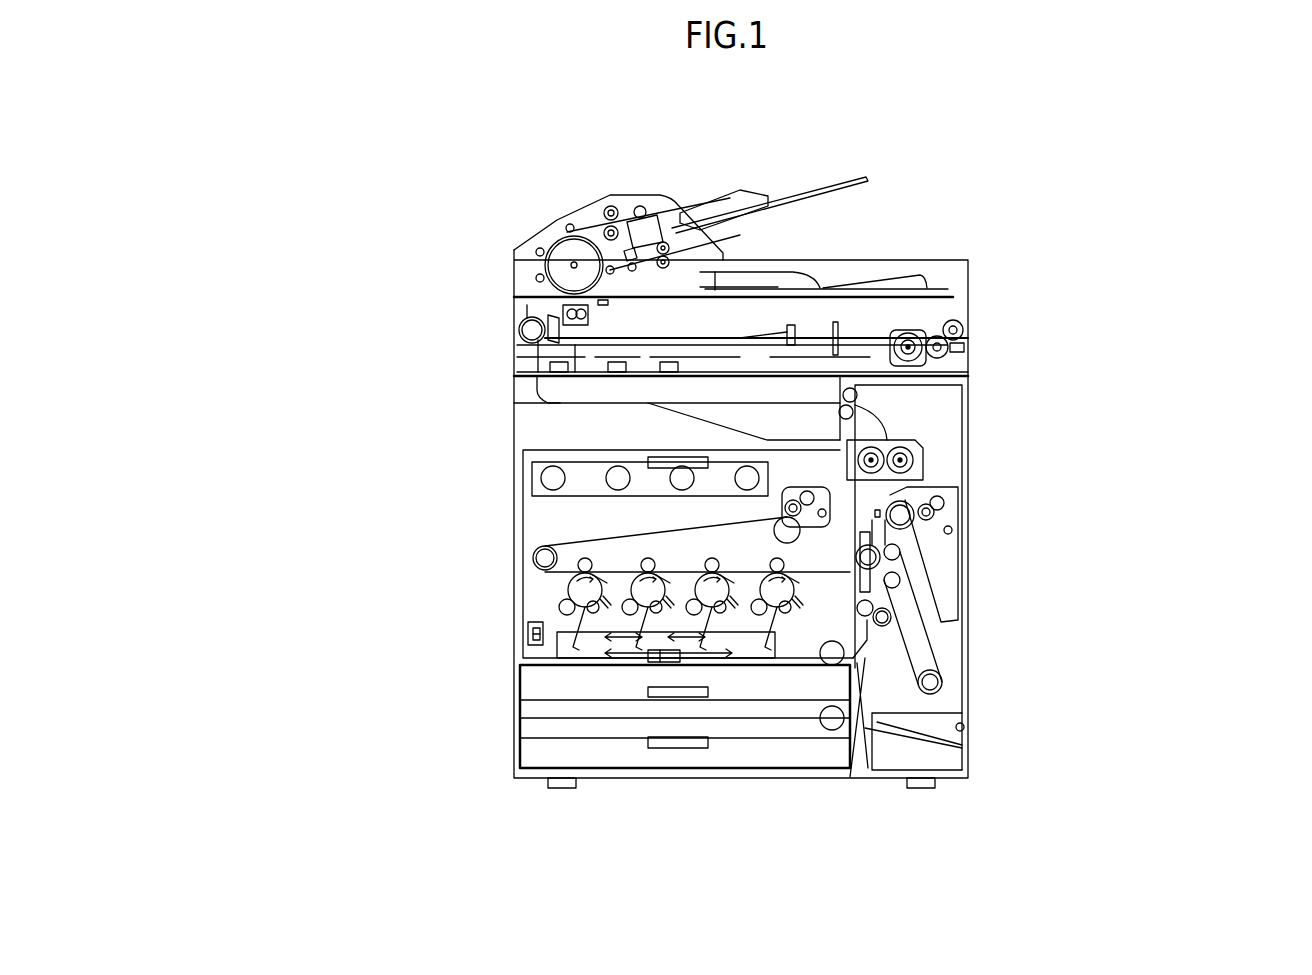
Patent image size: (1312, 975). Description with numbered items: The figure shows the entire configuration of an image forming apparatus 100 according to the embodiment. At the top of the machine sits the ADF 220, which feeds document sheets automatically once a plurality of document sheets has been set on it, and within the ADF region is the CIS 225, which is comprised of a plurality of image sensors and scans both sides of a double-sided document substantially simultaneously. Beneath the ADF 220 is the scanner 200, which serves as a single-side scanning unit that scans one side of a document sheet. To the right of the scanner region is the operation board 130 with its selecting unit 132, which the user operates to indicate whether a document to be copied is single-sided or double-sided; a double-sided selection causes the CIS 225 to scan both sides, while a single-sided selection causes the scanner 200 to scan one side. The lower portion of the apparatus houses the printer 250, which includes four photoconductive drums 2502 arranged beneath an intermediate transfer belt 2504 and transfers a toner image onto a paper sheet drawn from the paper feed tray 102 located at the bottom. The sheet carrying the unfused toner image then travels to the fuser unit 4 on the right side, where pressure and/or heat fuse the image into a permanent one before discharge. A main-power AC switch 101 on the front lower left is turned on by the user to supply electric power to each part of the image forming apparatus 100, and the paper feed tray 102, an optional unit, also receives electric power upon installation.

The image forming apparatus 100 is at (772, 172).
The ADF 220 is at (506, 248).
The CIS 225 is at (612, 300).
The scanner 200 is at (506, 315).
The operation board 130 is at (960, 362).
The selecting unit 132 is at (927, 343).
The fuser unit 4 is at (927, 468).
The printer 250 is at (506, 513).
The intermediate transfer belt 2504 is at (545, 546).
The photoconductive drum 2502 is at (566, 588).
The main-power AC switch 101 is at (520, 644).
The paper feed tray 102 is at (530, 692).